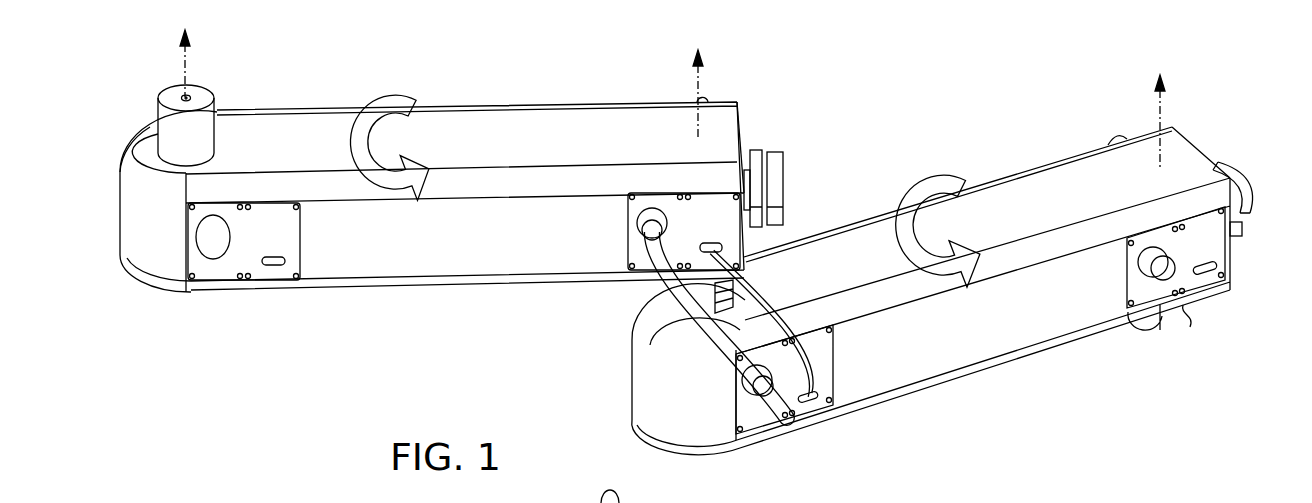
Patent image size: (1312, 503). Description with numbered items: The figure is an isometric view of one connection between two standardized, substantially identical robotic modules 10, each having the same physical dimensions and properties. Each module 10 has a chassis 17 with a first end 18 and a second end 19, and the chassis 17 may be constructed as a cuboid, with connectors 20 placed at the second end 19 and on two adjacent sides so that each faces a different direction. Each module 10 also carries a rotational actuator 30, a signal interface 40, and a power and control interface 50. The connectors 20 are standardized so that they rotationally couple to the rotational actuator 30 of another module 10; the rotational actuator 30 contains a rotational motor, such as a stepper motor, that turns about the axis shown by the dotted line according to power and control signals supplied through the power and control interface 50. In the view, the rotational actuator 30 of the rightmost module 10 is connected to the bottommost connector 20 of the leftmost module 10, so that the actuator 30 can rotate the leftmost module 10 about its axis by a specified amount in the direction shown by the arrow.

The module 10 is at (447, 284).
The chassis 17 is at (553, 87).
The first end 18 is at (124, 178).
The second end 19 is at (742, 112).
The connector 20 is at (707, 98).
The rotational actuator 30 is at (197, 120).
The signal interface 40 is at (272, 263).
The power and control interface 50 is at (210, 242).